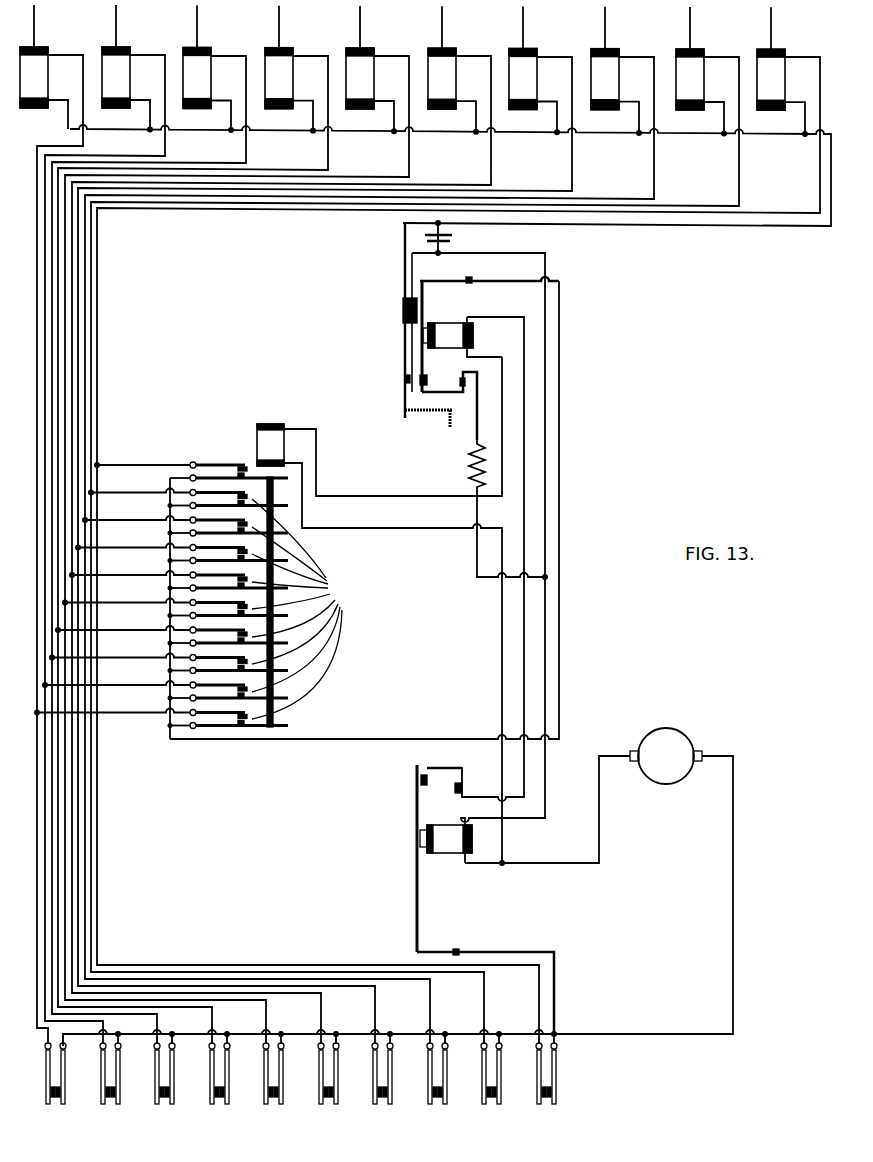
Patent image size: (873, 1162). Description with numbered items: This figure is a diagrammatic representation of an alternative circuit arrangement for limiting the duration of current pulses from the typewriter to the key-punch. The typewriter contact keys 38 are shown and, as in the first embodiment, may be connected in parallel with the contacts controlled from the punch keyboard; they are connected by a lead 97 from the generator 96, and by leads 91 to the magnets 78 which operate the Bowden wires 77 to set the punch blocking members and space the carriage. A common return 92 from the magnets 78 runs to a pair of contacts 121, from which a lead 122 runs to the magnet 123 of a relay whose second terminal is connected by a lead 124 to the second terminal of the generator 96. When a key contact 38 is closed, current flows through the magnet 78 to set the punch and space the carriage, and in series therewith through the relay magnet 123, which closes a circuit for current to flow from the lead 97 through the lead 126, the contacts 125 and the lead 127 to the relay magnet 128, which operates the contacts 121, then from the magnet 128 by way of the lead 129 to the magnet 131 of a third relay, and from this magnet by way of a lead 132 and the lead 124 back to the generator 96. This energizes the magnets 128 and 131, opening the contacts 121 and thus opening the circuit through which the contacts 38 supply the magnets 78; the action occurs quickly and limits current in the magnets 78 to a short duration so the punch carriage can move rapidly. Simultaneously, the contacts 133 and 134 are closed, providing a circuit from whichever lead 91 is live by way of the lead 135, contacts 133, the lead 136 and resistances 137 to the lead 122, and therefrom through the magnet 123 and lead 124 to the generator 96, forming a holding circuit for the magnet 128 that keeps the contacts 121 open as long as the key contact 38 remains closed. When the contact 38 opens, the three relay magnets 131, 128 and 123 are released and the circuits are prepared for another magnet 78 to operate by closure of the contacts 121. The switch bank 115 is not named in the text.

The Bowden wires 77 is at (771, 44).
The magnets 78 is at (772, 100).
The common return 92 is at (785, 228).
The leads 91 is at (90, 815).
The switch bank contacts 115 is at (157, 519).
The contacts 134 is at (309, 609).
The magnet of a third relay 131 is at (284, 445).
The lead 132 is at (397, 530).
The lead 129 is at (503, 410).
The lead 135 is at (378, 739).
The pair of contacts 121 is at (406, 373).
The lead 122 is at (537, 253).
The relay magnet 128 is at (450, 325).
The lead 127 is at (525, 637).
The lead 136 is at (477, 392).
The contacts 133 is at (423, 404).
The resistances 137 is at (471, 450).
The contacts 125 is at (424, 766).
The relay magnet 123 is at (453, 848).
The lead 124 is at (600, 806).
The generator 96 is at (680, 746).
The lead 97 is at (733, 917).
The lead 126 is at (556, 966).
The typewriter contact keys 38 is at (492, 1104).